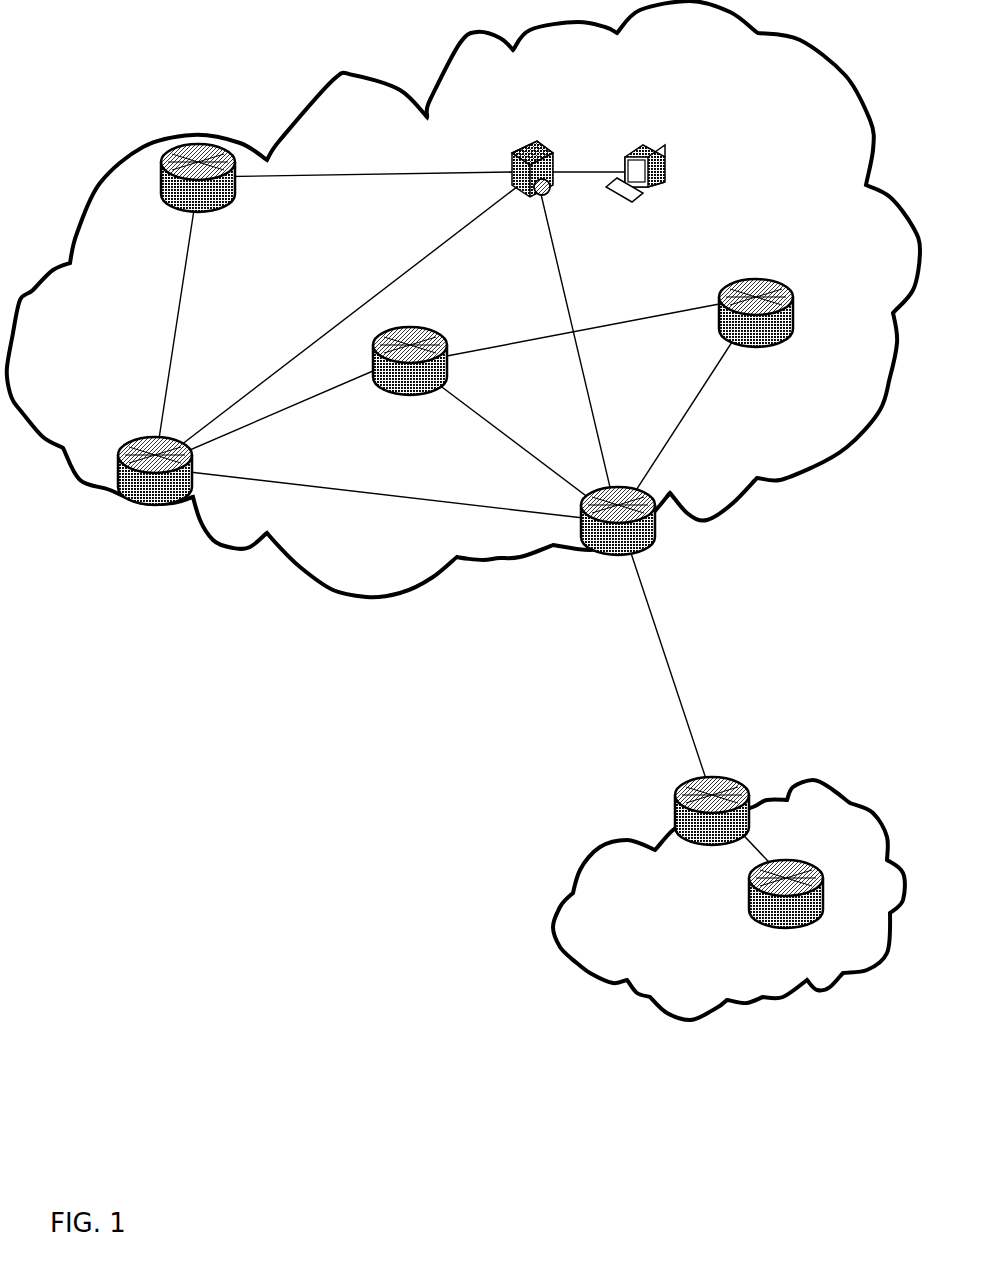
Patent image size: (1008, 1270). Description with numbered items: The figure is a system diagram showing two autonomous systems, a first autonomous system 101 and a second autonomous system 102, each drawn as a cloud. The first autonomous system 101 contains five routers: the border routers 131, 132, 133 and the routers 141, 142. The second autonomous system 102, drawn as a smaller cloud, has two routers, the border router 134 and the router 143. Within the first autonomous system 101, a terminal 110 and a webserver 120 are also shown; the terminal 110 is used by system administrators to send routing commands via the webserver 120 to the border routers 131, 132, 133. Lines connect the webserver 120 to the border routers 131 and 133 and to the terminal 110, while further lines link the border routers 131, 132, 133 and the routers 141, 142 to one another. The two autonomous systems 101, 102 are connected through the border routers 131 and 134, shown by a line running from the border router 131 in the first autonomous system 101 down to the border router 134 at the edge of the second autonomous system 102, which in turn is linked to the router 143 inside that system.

The autonomous system 101 is at (463, 299).
The autonomous system 102 is at (729, 898).
The terminal 110 is at (658, 159).
The webserver 120 is at (538, 154).
The border router 131 is at (634, 512).
The border router 132 is at (139, 455).
The border router 133 is at (177, 188).
The border router 134 is at (725, 795).
The router 141 is at (431, 355).
The router 142 is at (758, 328).
The router 143 is at (773, 914).